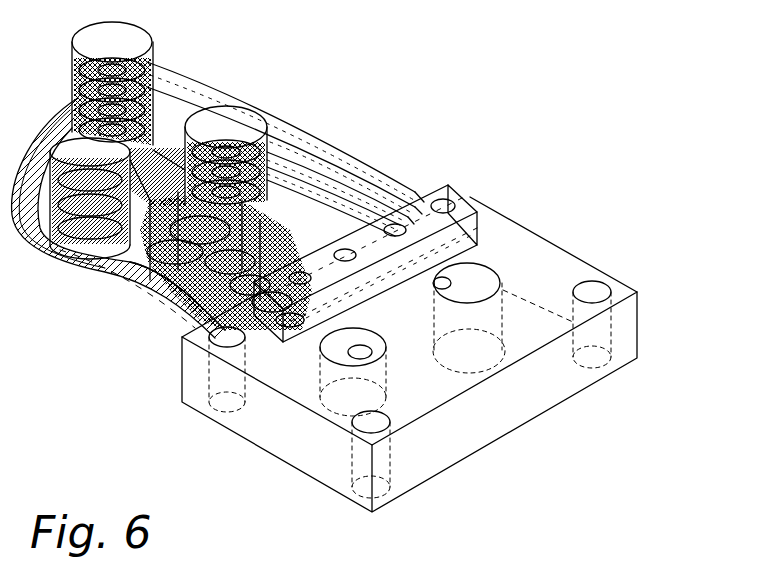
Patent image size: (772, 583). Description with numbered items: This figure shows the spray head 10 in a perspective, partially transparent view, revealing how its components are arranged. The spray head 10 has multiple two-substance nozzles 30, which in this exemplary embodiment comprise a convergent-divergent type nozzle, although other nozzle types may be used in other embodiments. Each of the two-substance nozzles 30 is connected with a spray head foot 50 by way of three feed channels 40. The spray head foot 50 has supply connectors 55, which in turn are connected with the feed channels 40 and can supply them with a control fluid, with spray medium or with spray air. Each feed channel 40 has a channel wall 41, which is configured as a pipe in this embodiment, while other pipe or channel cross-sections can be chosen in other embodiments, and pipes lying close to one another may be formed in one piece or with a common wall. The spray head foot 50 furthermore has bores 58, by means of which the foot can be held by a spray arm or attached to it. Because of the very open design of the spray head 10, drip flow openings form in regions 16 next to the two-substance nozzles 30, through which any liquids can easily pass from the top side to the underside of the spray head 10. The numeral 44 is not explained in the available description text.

The spray head 10 is at (575, 132).
The regions 16 is at (172, 341).
The two-substance nozzles 30 is at (138, 37).
The feed channels 40 is at (328, 197).
The channel wall 41 is at (145, 290).
The manifold bar 44 is at (427, 220).
The spray head foot 50 is at (288, 450).
The supply connectors 55 is at (386, 350).
The bores 58 is at (588, 353).